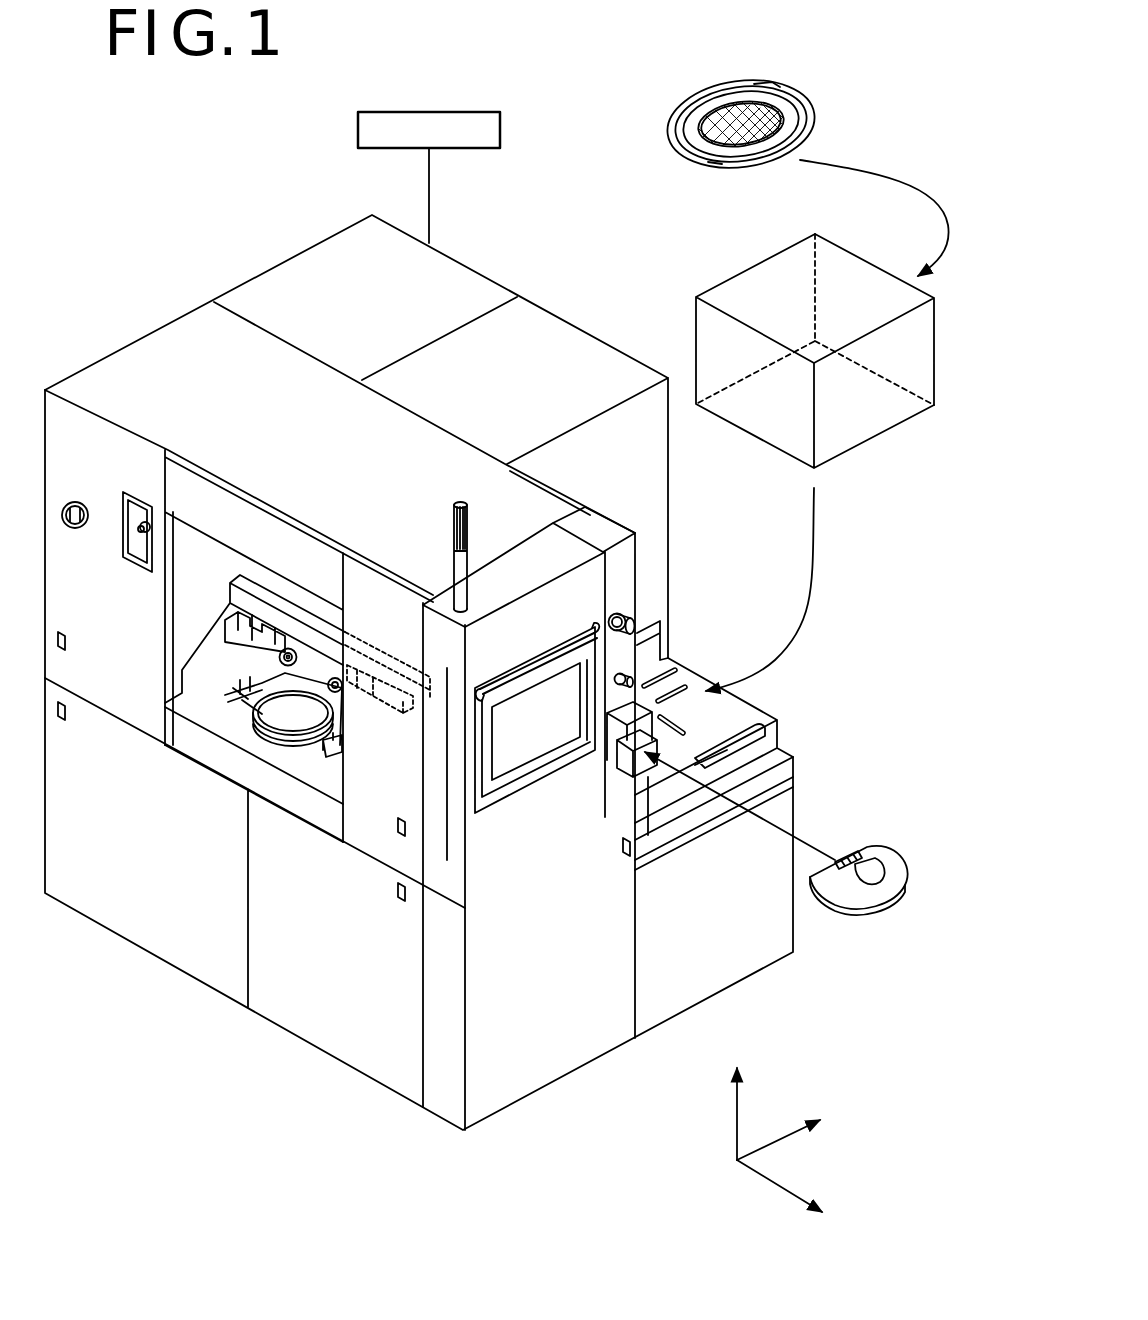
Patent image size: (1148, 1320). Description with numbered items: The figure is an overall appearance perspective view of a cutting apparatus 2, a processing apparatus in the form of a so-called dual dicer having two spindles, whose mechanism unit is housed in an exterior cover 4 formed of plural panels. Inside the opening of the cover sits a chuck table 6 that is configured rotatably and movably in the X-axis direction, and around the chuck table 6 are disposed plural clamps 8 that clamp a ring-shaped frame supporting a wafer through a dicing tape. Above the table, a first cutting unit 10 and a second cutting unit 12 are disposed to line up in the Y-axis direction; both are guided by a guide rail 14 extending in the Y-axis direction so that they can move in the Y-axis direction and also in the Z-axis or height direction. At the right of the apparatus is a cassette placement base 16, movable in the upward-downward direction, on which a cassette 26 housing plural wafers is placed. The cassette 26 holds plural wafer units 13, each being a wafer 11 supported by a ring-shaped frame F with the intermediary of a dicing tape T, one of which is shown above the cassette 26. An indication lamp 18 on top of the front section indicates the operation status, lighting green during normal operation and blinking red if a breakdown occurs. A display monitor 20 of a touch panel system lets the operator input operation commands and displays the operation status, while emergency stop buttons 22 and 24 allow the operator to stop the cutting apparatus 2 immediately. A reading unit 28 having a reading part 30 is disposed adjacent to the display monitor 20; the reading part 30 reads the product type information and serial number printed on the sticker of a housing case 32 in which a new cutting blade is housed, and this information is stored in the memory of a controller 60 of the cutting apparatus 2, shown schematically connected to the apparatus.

The cutting apparatus 2 is at (556, 294).
The exterior cover 4 is at (647, 497).
The chuck table 6 is at (295, 722).
The clamps 8 is at (237, 700).
The first cutting unit 10 is at (238, 649).
The wafer 11 is at (766, 104).
The second cutting unit 12 is at (360, 713).
The wafer unit 13 is at (777, 132).
The guide rail 14 is at (262, 597).
The cassette placement base 16 is at (723, 707).
The indication lamp 18 is at (452, 523).
The display monitor 20 is at (522, 752).
The emergency stop button 22 is at (143, 528).
The emergency stop button 24 is at (637, 630).
The cassette 26 is at (843, 285).
The reading unit 28 is at (655, 780).
The reading part 30 is at (615, 760).
The housing case 32 is at (883, 867).
The controller 60 is at (420, 112).
The ring-shaped frame F is at (677, 112).
The dicing tape T is at (740, 155).